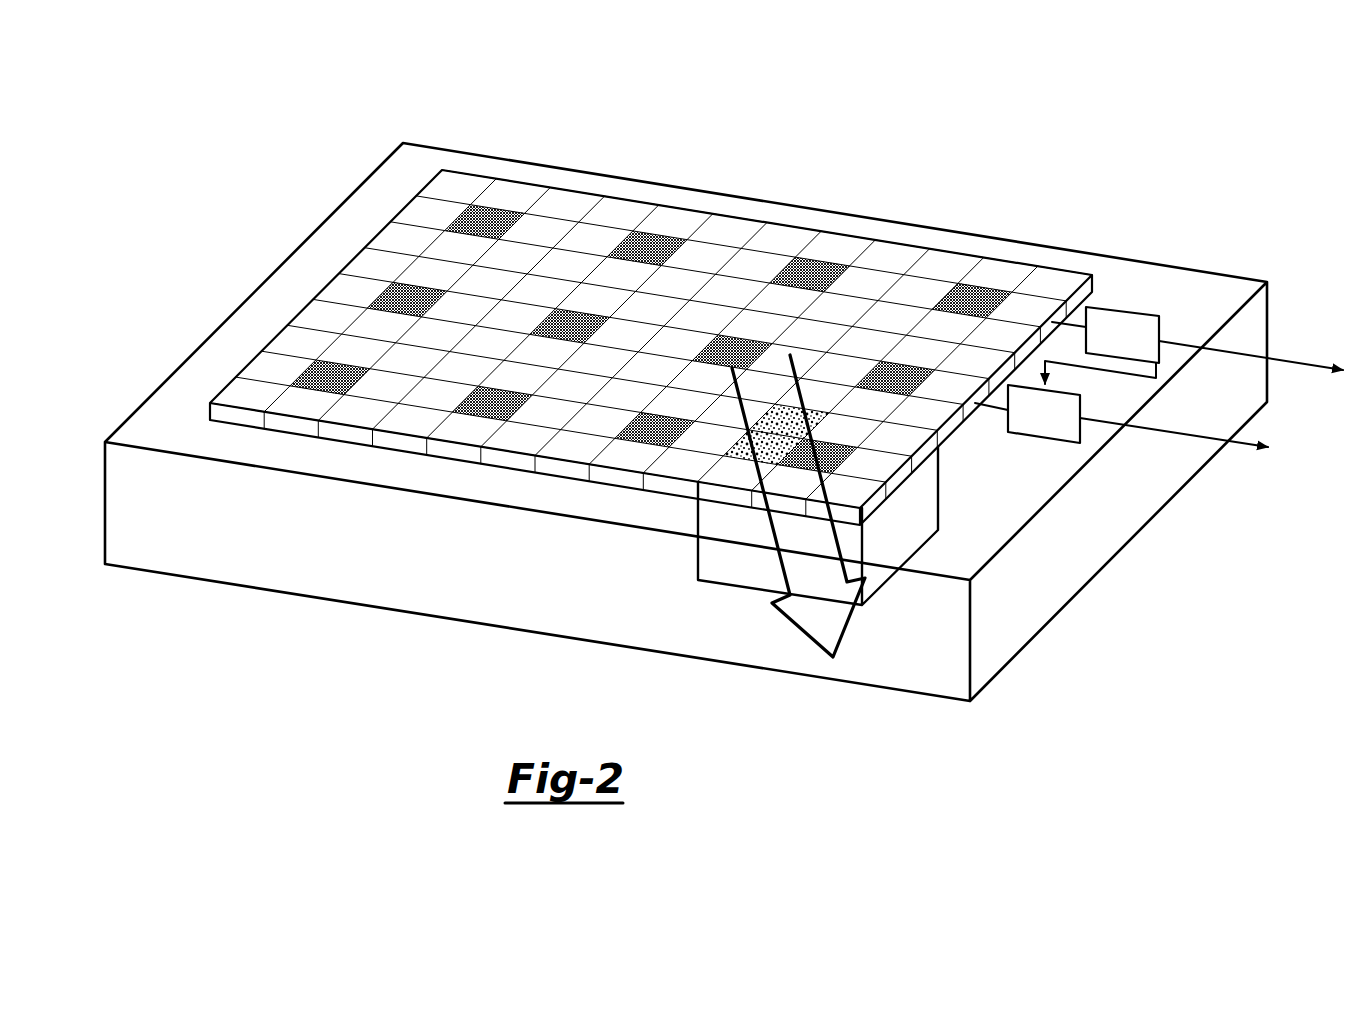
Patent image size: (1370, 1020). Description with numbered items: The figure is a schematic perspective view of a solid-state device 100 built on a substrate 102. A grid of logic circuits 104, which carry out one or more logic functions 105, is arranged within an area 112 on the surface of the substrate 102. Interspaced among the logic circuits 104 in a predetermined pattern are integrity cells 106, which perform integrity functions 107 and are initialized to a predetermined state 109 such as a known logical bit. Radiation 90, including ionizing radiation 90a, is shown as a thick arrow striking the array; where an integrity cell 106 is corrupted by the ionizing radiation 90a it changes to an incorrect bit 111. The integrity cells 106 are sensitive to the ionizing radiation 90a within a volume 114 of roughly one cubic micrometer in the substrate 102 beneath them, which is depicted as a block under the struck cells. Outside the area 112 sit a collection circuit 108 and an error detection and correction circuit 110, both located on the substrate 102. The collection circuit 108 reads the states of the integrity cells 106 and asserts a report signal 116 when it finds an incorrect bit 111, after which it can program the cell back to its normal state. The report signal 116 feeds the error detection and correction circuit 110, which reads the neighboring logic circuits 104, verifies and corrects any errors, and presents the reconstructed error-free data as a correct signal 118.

The solid-state device 100 is at (1119, 113).
The substrate 102 is at (263, 590).
The logic circuits 104 is at (651, 309).
The logic functions 105 is at (651, 309).
The integrity cells 106 is at (651, 301).
The integrity functions 107 is at (651, 301).
The predetermined state 109 is at (651, 301).
The incorrect bit 111 is at (650, 248).
The collection circuit 108 is at (1102, 345).
The error detection and correction circuit 110 is at (1027, 414).
The area 112 is at (325, 283).
The volume 114 is at (722, 587).
The report signal 116 is at (1277, 362).
The correct signal 118 is at (1197, 438).
The radiation 90 is at (807, 558).
The ionizing radiation 90a is at (847, 639).